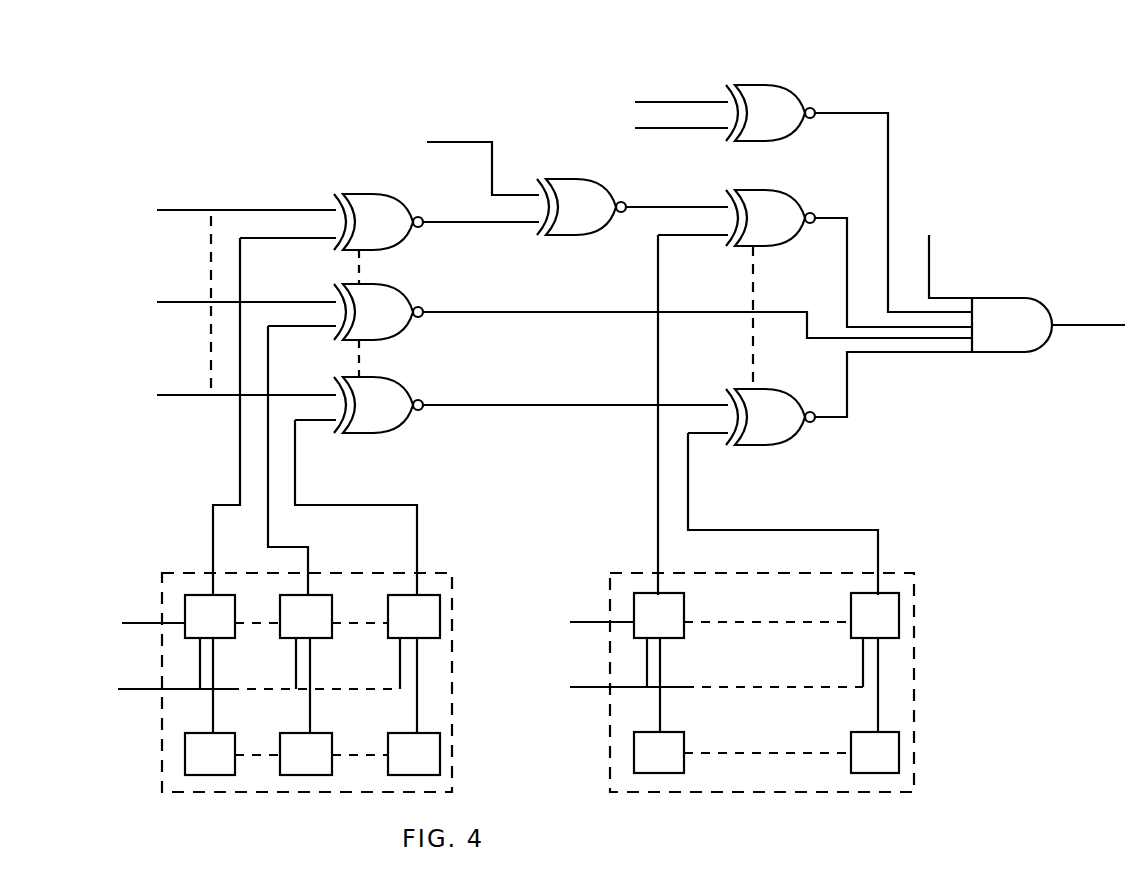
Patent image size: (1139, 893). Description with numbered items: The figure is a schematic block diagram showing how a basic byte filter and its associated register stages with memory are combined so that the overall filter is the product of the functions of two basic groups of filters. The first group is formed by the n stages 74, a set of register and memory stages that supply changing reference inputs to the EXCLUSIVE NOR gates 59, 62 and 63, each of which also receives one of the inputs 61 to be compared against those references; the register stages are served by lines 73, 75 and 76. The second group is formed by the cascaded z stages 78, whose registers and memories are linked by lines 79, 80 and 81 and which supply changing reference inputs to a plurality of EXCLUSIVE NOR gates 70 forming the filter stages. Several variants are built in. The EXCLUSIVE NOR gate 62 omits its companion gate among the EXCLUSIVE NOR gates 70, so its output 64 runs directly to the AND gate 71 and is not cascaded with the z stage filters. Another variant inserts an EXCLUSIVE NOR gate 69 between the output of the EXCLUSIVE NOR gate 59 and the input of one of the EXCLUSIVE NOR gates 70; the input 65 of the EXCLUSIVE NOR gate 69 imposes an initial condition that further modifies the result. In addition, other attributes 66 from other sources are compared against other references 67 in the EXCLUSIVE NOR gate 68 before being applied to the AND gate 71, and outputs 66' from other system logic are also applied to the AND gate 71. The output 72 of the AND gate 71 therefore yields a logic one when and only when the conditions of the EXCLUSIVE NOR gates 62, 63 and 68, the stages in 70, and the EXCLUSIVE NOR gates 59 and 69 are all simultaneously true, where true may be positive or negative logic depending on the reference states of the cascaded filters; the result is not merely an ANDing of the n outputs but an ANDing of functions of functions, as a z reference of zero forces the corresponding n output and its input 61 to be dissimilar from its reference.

The EXCLUSIVE NOR gate 59 is at (376, 194).
The inputs 61 is at (209, 257).
The EXCLUSIVE NOR gate 62 is at (400, 292).
The EXCLUSIVE NOR gate 63 is at (364, 360).
The output of EXCLUSIVE NOR gate 62 64 is at (556, 312).
The input of EXCLUSIVE NOR gate 69 65 is at (495, 170).
The other attributes 66 is at (681, 80).
The other references 67 is at (693, 128).
The EXCLUSIVE NOR gate 68 is at (760, 85).
The EXCLUSIVE NOR gate 69 is at (572, 179).
The EXCLUSIVE NOR gates (filter stages) 70 is at (749, 333).
The AND gate 71 is at (1026, 298).
The output 72 is at (1078, 323).
The connection line 73 is at (268, 536).
The n stages 74 is at (351, 573).
The input line 75 is at (146, 623).
The input line 76 is at (140, 689).
The z stages 78 is at (764, 573).
The input line 79 is at (597, 622).
The input line 80 is at (597, 687).
The memory connection 81 is at (759, 753).
The outputs from other systems logic 66' is at (956, 263).